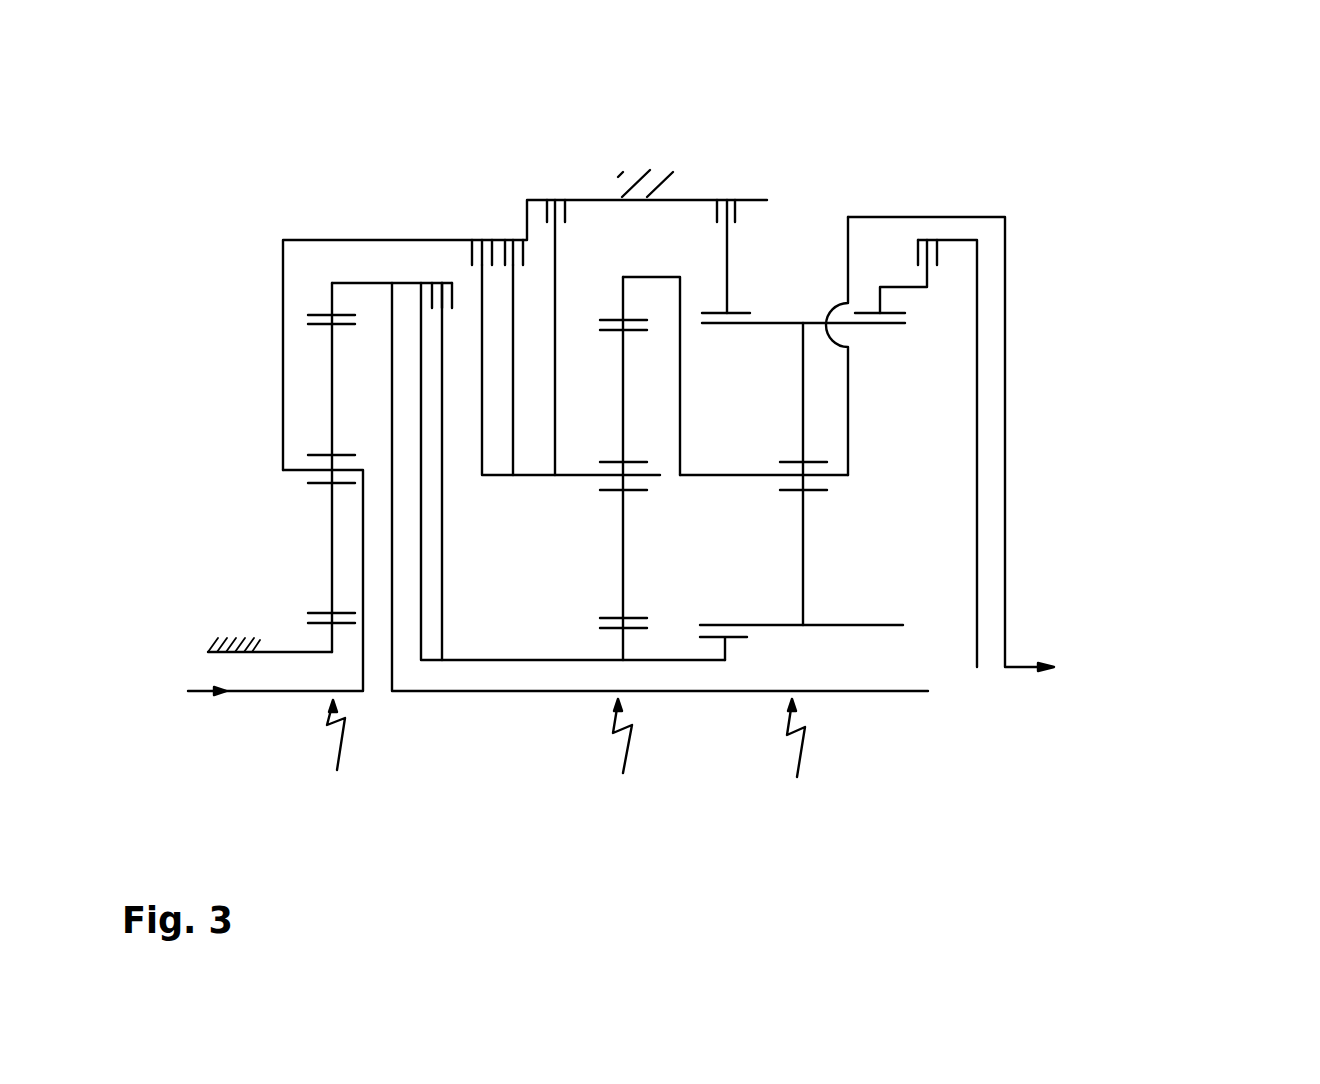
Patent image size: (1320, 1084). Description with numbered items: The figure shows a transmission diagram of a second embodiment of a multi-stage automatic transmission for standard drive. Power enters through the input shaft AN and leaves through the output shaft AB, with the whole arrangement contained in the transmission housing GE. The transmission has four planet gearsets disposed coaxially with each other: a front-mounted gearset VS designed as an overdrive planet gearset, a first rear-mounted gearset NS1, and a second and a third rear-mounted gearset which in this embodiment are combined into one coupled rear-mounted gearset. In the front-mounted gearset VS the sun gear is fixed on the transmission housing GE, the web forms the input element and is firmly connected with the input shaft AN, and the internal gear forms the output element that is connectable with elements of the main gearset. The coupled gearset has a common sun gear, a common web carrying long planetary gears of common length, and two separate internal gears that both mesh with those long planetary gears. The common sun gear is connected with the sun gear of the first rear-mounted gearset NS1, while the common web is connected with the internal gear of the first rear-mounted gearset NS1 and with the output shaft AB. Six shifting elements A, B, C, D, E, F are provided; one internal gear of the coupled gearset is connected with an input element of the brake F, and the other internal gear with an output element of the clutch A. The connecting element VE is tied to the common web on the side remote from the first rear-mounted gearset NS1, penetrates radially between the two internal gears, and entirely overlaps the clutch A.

The input shaft AN is at (290, 693).
The output shaft AB is at (1022, 669).
The transmission housing GE is at (240, 640).
The front-mounted gearset VS is at (331, 766).
The first rear-mounted gearset NS1 is at (621, 765).
The connecting element VE is at (967, 218).
The first shifting element A is at (916, 447).
The second shifting element B is at (442, 275).
The third shifting element C is at (474, 231).
The fourth shifting element D is at (554, 311).
The fifth shifting element E is at (512, 231).
The sixth shifting element F is at (726, 230).